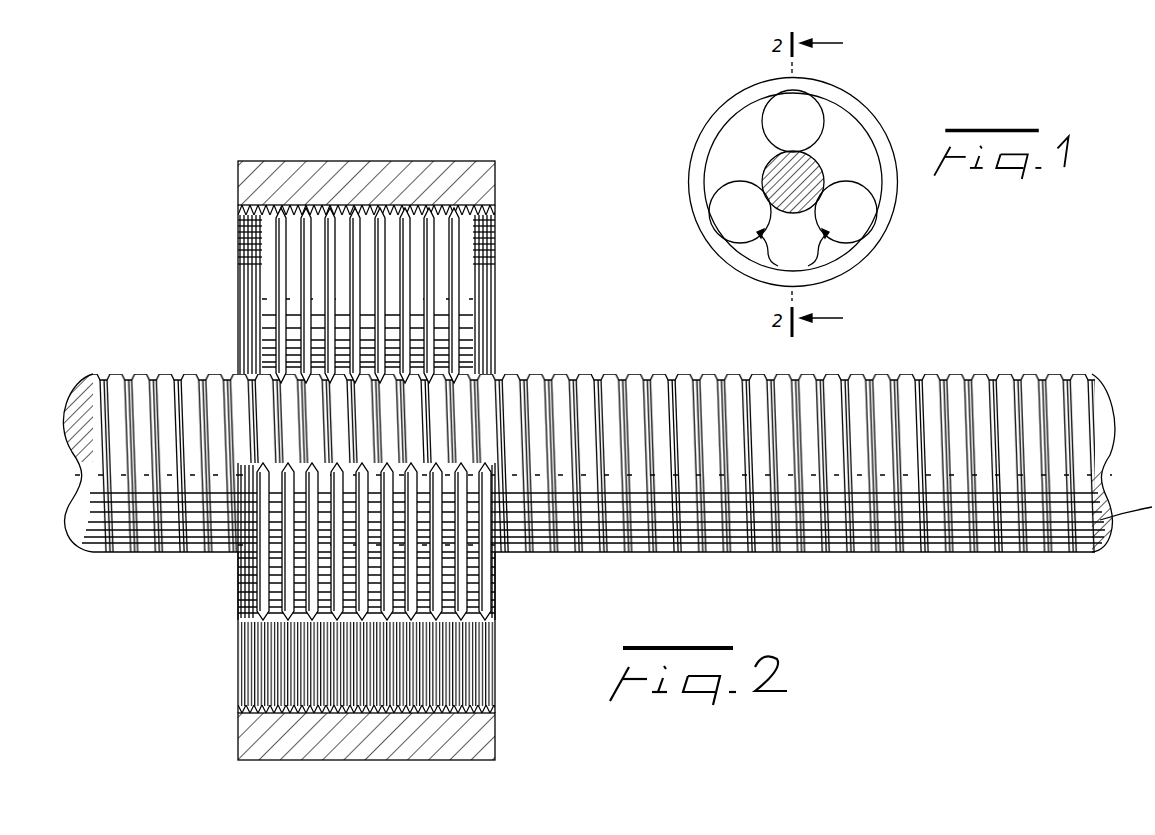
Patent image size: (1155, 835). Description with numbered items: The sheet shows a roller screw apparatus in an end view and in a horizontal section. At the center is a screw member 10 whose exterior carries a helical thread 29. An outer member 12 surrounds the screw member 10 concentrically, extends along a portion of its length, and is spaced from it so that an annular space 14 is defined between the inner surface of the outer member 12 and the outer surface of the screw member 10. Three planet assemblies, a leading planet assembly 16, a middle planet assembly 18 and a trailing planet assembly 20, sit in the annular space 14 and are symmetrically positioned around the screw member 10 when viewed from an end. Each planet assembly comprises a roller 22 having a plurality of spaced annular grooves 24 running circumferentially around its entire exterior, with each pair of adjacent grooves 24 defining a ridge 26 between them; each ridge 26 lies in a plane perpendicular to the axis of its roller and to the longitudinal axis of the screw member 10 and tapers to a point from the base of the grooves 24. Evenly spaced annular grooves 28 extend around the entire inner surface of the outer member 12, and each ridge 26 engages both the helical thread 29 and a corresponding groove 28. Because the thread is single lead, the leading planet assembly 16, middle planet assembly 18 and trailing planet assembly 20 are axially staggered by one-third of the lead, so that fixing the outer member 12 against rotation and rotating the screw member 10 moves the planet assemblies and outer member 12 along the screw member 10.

In FIG. 1, the screw member 10 is at (817, 160).
In FIG. 1, the outer member 12 is at (873, 125).
In FIG. 1, the annular space 14 is at (872, 177).
In FIG. 2, the leading planet assembly 16 is at (497, 287).
In FIG. 1, the leading planet assembly 16 is at (808, 260).
In FIG. 1, the middle planet assembly 18 is at (752, 120).
In FIG. 2, the trailing planet assembly 20 is at (497, 590).
In FIG. 1, the trailing planet assembly 20 is at (772, 250).
In FIG. 2, the roller 22 is at (497, 250).
In FIG. 2, the annular grooves 24 is at (440, 330).
In FIG. 2, the ridges 26 is at (379, 295).
In FIG. 2, the annular grooves 28 is at (497, 229).
In FIG. 2, the helical thread 29 is at (1037, 374).